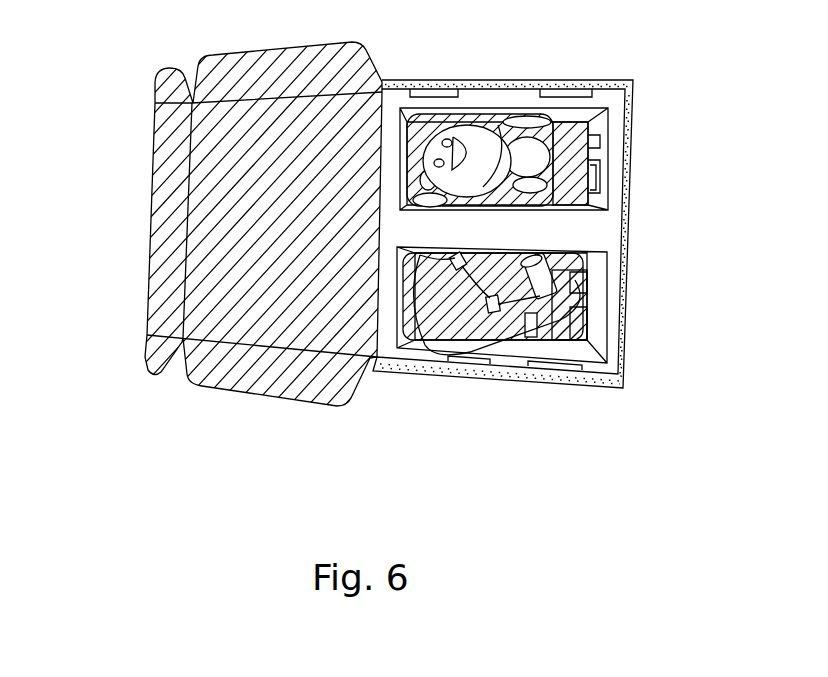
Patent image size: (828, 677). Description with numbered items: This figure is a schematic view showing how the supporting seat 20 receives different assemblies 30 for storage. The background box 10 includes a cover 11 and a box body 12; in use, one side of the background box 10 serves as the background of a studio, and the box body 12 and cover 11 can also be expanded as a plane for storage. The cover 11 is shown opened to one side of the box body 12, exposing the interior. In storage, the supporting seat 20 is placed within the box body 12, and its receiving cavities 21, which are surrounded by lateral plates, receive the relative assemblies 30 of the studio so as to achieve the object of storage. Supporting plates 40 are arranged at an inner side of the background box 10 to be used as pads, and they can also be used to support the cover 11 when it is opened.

The background box 10 is at (138, 112).
The cover 11 is at (148, 230).
The box body 12 is at (572, 80).
The supporting seat 20 is at (593, 230).
The receiving cavity 21 is at (603, 123).
The assemblies 30 is at (472, 132).
The supporting plate 40 is at (584, 160).